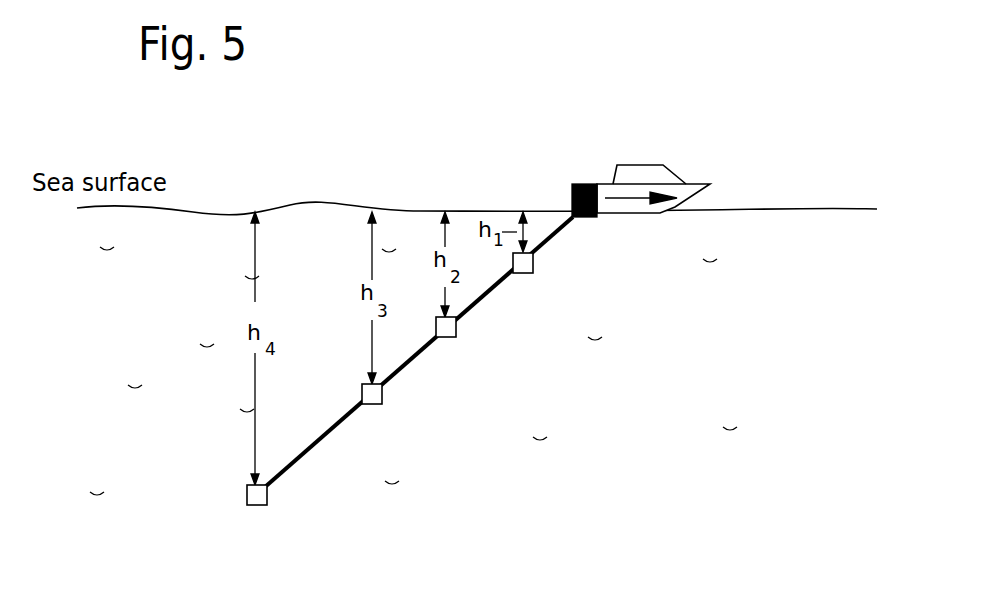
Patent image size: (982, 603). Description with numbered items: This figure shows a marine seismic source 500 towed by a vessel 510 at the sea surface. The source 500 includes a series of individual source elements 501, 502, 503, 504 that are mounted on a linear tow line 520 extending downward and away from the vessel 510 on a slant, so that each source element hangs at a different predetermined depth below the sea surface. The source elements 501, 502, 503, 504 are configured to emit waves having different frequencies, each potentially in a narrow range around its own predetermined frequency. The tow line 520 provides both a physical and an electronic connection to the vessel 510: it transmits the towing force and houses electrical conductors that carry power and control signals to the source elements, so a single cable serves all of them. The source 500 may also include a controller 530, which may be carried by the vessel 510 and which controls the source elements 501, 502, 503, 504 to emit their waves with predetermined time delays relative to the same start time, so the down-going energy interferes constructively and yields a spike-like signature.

The marine seismic source 500 is at (428, 381).
The source element 501 is at (546, 267).
The source element 502 is at (469, 329).
The source element 503 is at (393, 399).
The source element 504 is at (278, 496).
The vessel 510 is at (687, 185).
The linear tow line 520 is at (327, 437).
The controller 530 is at (578, 184).